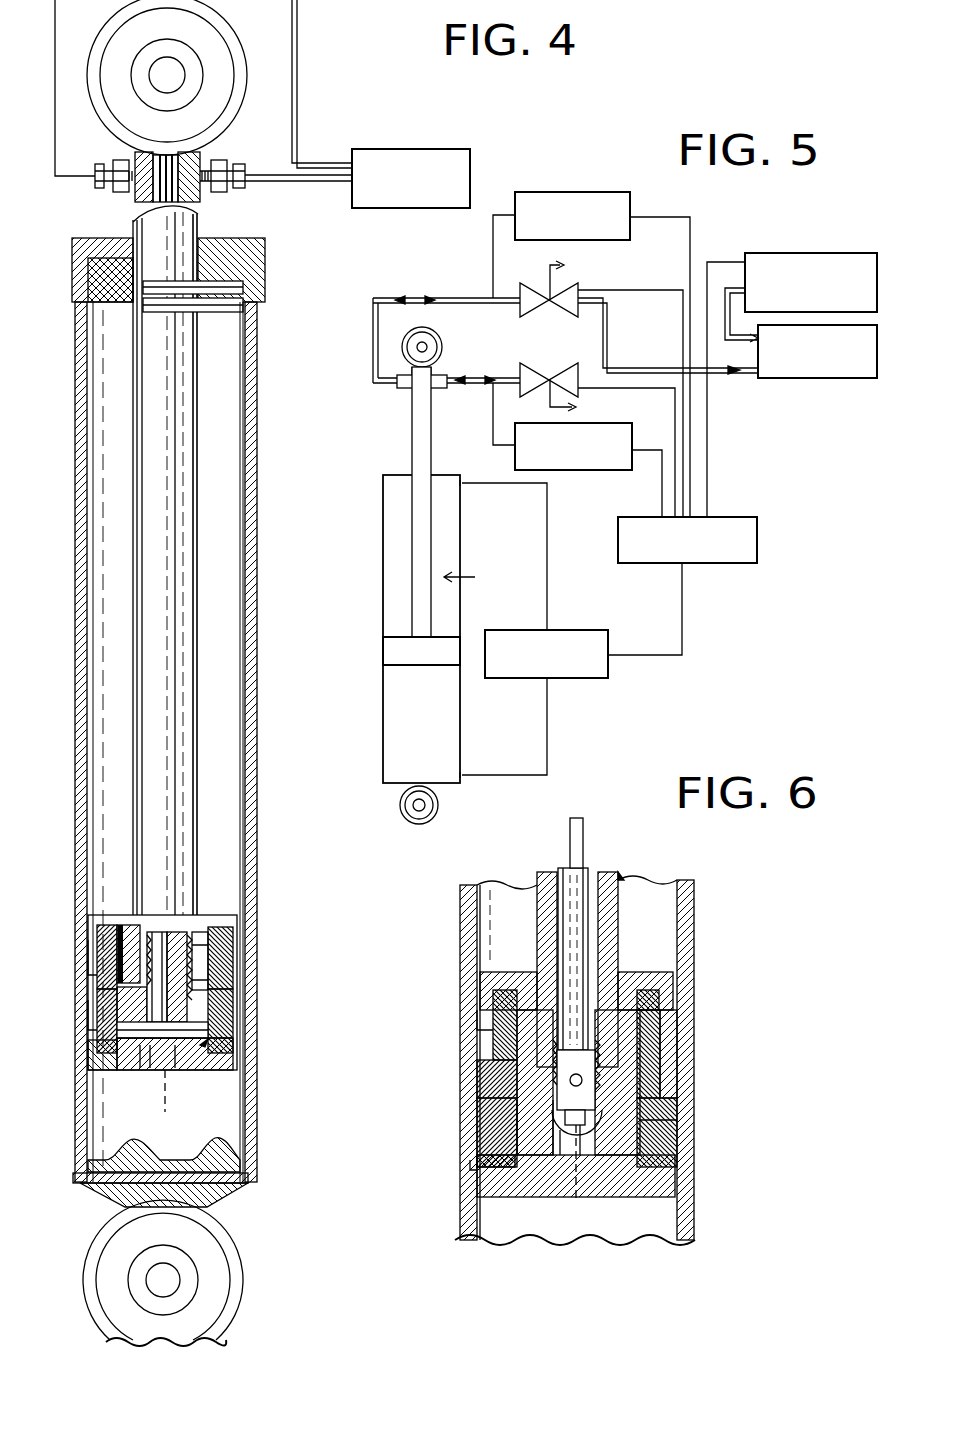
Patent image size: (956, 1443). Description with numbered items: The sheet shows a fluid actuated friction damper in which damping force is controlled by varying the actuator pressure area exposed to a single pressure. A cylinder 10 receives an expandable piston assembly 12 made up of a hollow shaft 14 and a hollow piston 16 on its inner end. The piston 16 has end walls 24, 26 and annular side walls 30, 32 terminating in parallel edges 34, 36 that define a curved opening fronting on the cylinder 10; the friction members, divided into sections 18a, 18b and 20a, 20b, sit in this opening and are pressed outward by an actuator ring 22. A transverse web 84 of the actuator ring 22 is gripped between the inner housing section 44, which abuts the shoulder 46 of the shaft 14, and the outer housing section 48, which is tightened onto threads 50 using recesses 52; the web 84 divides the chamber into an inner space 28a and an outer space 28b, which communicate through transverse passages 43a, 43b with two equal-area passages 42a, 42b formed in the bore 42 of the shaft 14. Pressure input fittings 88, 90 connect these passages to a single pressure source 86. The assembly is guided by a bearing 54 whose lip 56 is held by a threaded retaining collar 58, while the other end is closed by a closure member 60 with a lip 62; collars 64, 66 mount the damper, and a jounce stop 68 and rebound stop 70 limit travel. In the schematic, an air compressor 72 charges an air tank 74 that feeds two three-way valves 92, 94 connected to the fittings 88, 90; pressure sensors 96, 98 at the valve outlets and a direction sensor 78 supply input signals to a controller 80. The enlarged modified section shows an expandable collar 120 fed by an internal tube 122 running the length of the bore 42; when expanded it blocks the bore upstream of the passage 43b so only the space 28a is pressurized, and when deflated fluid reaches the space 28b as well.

In FIG. 4, the cylinder 10 is at (257, 600).
In FIG. 5, the cylinder 10 is at (460, 607).
In FIG. 6, the cylinder 10 is at (694, 900).
In FIG. 5, the expandable piston assembly 12 is at (477, 576).
In FIG. 4, the hollow shaft 14 is at (165, 560).
In FIG. 5, the hollow shaft 14 is at (428, 545).
In FIG. 6, the hollow shaft 14 is at (612, 880).
In FIG. 4, the hollow piston 16 is at (205, 1060).
In FIG. 5, the hollow piston 16 is at (415, 665).
In FIG. 4, the friction member section 18a is at (97, 962).
In FIG. 6, the friction member section 18a is at (480, 1048).
In FIG. 4, the friction member section 18b is at (97, 1010).
In FIG. 6, the friction member section 18b is at (480, 1112).
In FIG. 4, the friction member section 20a is at (240, 960).
In FIG. 6, the friction member section 20a is at (680, 1028).
In FIG. 4, the friction member section 20b is at (240, 1015).
In FIG. 6, the friction member section 20b is at (680, 1095).
In FIG. 4, the actuator ring 22 is at (237, 1066).
In FIG. 6, the actuator ring 22 is at (655, 1125).
In FIG. 4, the end wall 24 is at (232, 915).
In FIG. 6, the end wall 24 is at (660, 985).
In FIG. 4, the end wall 26 is at (178, 1060).
In FIG. 4, the inner space 28a is at (120, 925).
In FIG. 6, the inner space 28a is at (505, 990).
In FIG. 4, the outer space 28b is at (97, 1055).
In FIG. 6, the outer space 28b is at (520, 1162).
In FIG. 4, the annular side wall 30 is at (232, 945).
In FIG. 6, the annular side wall 30 is at (665, 1020).
In FIG. 4, the annular side wall 32 is at (225, 1050).
In FIG. 6, the annular side wall 32 is at (670, 1167).
In FIG. 4, the edge 34 is at (92, 948).
In FIG. 6, the edge 34 is at (480, 1020).
In FIG. 4, the edge 36 is at (88, 1026).
In FIG. 6, the edge 36 is at (475, 1148).
In FIG. 6, the bore 42 is at (588, 880).
In FIG. 4, the passage 42a is at (138, 192).
In FIG. 4, the passage 42b is at (178, 165).
In FIG. 4, the transverse passage 43a is at (157, 932).
In FIG. 6, the transverse passage 43a is at (545, 1050).
In FIG. 4, the transverse passage 43b is at (130, 1040).
In FIG. 6, the transverse passage 43b is at (530, 1140).
In FIG. 4, the inner housing section 44 is at (130, 925).
In FIG. 6, the inner housing section 44 is at (528, 980).
In FIG. 4, the enlarged diameter shoulder 46 is at (195, 932).
In FIG. 6, the enlarged diameter shoulder 46 is at (620, 965).
In FIG. 4, the outer housing section 48 is at (138, 1055).
In FIG. 6, the outer housing section 48 is at (562, 1145).
In FIG. 4, the threads 50 is at (155, 935).
In FIG. 6, the threads 50 is at (582, 1140).
In FIG. 4, the recess 52 is at (162, 1076).
In FIG. 6, the recess 52 is at (590, 1130).
In FIG. 4, the bearing 54 is at (250, 250).
In FIG. 4, the peripheral lip 56 is at (100, 262).
In FIG. 4, the threaded retaining collar 58 is at (243, 288).
In FIG. 4, the closure member 60 is at (225, 1195).
In FIG. 4, the peripheral lip 62 is at (250, 1185).
In FIG. 4, the collar 64 is at (233, 30).
In FIG. 5, the collar 64 is at (436, 333).
In FIG. 4, the collar 66 is at (243, 1272).
In FIG. 5, the collar 66 is at (419, 824).
In FIG. 4, the rubber jounce stop 68 is at (215, 1150).
In FIG. 4, the rebound stop 70 is at (238, 310).
In FIG. 5, the air compressor 72 is at (815, 253).
In FIG. 5, the air tank 74 is at (812, 378).
In FIG. 5, the direction sensor 78 is at (583, 678).
In FIG. 5, the controller 80 is at (757, 543).
In FIG. 4, the transverse web 84 is at (195, 935).
In FIG. 6, the transverse web 84 is at (640, 1060).
In FIG. 5, the single pressure source 86 is at (405, 208).
In FIG. 4, the pressure input fitting 88 is at (100, 163).
In FIG. 5, the pressure input fitting 88 is at (400, 388).
In FIG. 4, the pressure input fitting 90 is at (240, 190).
In FIG. 5, the pressure input fitting 90 is at (440, 388).
In FIG. 5, the three-way valve 92 is at (545, 320).
In FIG. 5, the three-way valve 94 is at (553, 365).
In FIG. 5, the pressure sensor 96 is at (585, 192).
In FIG. 5, the pressure sensor 98 is at (595, 470).
In FIG. 6, the expandable collar 120 is at (595, 1080).
In FIG. 6, the internal tube 122 is at (578, 822).